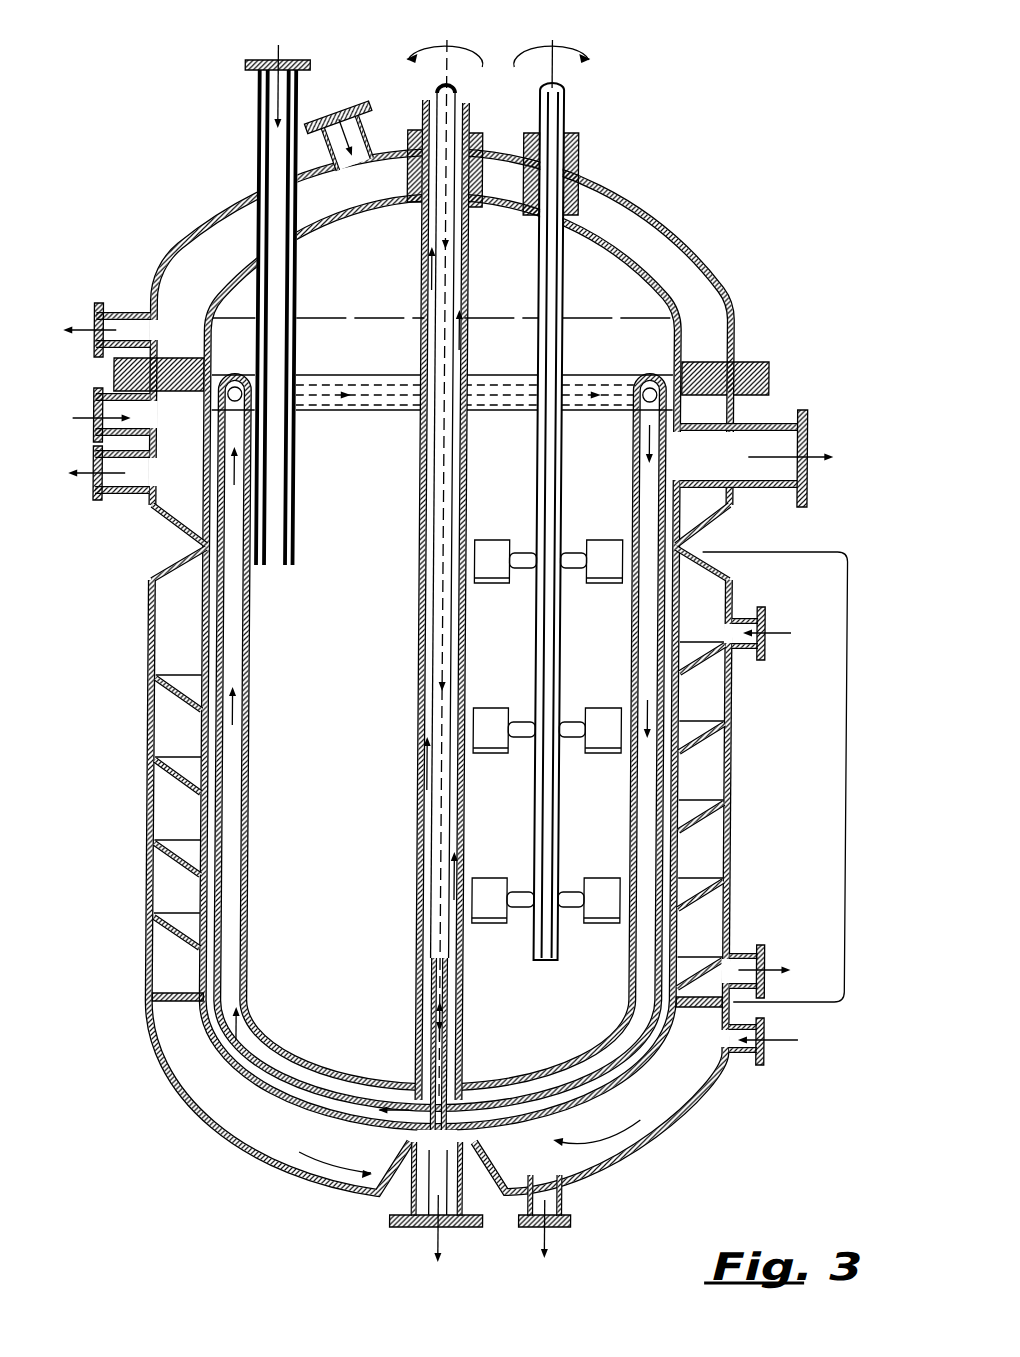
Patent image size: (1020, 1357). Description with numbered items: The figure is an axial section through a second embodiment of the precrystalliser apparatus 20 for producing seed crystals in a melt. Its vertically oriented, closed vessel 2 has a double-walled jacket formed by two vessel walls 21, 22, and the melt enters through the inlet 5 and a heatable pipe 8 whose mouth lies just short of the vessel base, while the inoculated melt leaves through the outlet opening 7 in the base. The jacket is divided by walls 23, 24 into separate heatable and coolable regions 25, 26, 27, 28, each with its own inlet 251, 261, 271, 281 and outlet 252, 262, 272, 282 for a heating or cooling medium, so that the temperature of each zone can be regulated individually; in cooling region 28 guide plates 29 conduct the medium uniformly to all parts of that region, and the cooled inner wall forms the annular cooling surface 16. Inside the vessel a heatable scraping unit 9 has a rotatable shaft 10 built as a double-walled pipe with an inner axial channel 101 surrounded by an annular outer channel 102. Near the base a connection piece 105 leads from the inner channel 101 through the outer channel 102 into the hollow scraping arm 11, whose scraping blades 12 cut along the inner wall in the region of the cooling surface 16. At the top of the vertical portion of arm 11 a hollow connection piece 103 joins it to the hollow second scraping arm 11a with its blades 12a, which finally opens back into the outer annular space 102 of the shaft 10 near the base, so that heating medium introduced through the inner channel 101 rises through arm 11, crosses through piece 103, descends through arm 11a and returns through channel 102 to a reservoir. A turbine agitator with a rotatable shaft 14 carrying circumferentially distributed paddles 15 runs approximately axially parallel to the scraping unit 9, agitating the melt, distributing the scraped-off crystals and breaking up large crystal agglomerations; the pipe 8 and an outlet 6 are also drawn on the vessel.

The vessel 2 is at (167, 870).
The inlet 5 is at (253, 128).
The outlet nozzle 6 is at (763, 446).
The outlet opening 7 is at (437, 1217).
The pipe 8 is at (290, 548).
The scraping unit 9 is at (266, 1068).
The rotatable shaft 10 is at (414, 508).
The scraping arm 11 is at (247, 965).
The second scraping arm 11a is at (668, 985).
The scraping blades 12 is at (222, 608).
The scraping blades 12a is at (652, 620).
The rotatable shaft 14 is at (539, 468).
The paddles 15 is at (492, 584).
The annular cooling surface 16 is at (852, 770).
The apparatus 20 is at (190, 1173).
The vessel wall 21 is at (149, 640).
The vessel wall 22 is at (150, 712).
The wall 23 is at (167, 992).
The wall 24 is at (162, 555).
The heatable and coolable region 25 is at (625, 240).
The heatable and coolable region 26 is at (178, 488).
The heatable and coolable region 27 is at (626, 1120).
The cooling region 28 is at (715, 765).
The guide plates 29 is at (165, 768).
The inner axial channel 101 is at (452, 1052).
The annular outer channel 102 is at (437, 1028).
The hollow connection piece 103 is at (381, 378).
The connection piece 105 is at (409, 1097).
The inlet 251 is at (341, 115).
The outlet 252 is at (128, 318).
The inlet 261 is at (95, 417).
The outlet 262 is at (95, 480).
The inlet 271 is at (766, 1042).
The outlet 272 is at (567, 1228).
The inlet 281 is at (767, 628).
The outlet 282 is at (769, 955).